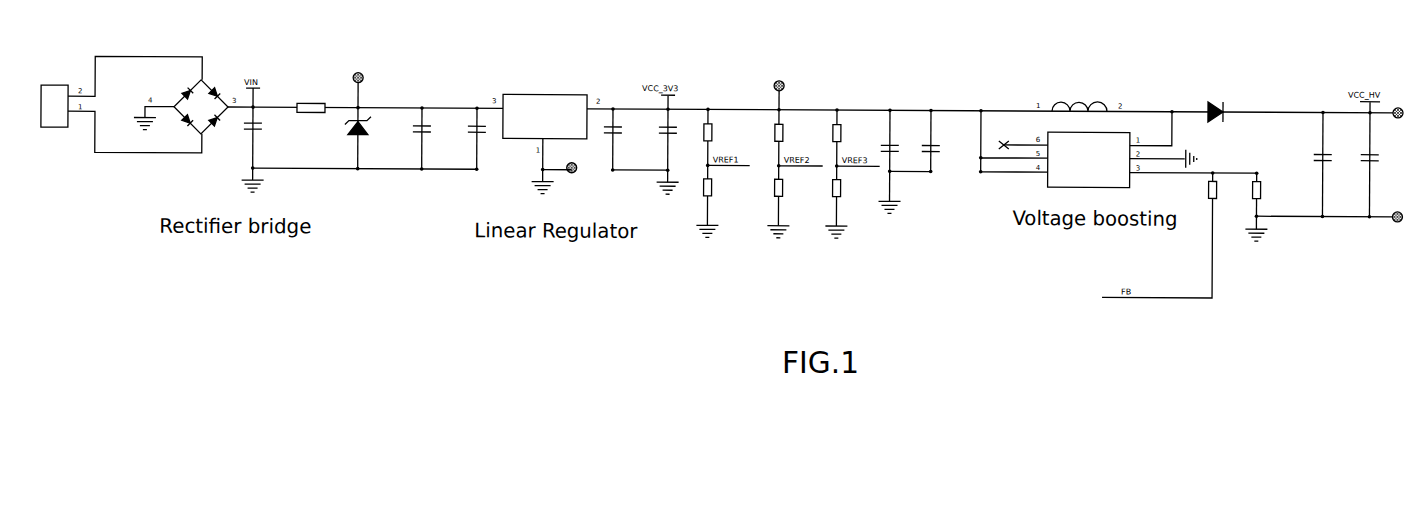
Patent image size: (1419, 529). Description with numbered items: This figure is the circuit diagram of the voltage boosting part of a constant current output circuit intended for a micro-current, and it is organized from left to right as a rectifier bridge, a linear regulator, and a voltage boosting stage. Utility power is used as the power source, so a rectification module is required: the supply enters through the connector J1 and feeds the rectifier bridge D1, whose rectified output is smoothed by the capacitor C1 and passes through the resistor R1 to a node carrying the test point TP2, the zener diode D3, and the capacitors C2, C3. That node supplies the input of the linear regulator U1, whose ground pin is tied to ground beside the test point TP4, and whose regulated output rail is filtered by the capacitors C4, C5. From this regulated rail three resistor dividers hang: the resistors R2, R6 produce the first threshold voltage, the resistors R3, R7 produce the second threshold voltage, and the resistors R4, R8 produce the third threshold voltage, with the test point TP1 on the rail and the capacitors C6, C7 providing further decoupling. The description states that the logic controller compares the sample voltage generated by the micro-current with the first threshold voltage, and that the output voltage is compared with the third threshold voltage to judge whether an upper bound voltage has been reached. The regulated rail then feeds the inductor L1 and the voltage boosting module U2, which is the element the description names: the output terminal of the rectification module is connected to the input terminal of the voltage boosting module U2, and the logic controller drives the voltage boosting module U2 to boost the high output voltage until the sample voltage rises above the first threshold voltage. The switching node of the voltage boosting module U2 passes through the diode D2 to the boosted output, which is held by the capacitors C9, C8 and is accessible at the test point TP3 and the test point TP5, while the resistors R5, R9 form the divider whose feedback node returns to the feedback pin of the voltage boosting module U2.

The input connector J1 is at (54, 100).
The rectifier bridge diode D1 is at (181, 106).
The capacitor C1 is at (258, 157).
The resistor R1 is at (311, 101).
The test point TP2 is at (367, 90).
The zener diode D3 is at (365, 138).
The capacitor C2 is at (429, 138).
The capacitor C3 is at (483, 138).
The linear regulator U1 is at (544, 145).
The test point TP4 is at (560, 178).
The capacitor C4 is at (620, 139).
The capacitor C5 is at (672, 159).
The resistor R2 is at (715, 132).
The resistor R6 is at (710, 216).
The test point TP1 is at (788, 95).
The resistor R3 is at (786, 132).
The resistor R7 is at (781, 216).
The resistor R4 is at (844, 133).
The resistor R8 is at (839, 217).
The capacitor C6 is at (893, 168).
The capacitor C7 is at (937, 141).
The inductor L1 is at (1079, 102).
The voltage boosting module U2 is at (1134, 154).
The diode D2 is at (1215, 106).
The capacitor C9 is at (1329, 164).
The capacitor C8 is at (1376, 165).
The test point TP3 is at (1398, 122).
The test point TP5 is at (1397, 226).
The resistor R5 is at (1259, 214).
The resistor R9 is at (1219, 195).